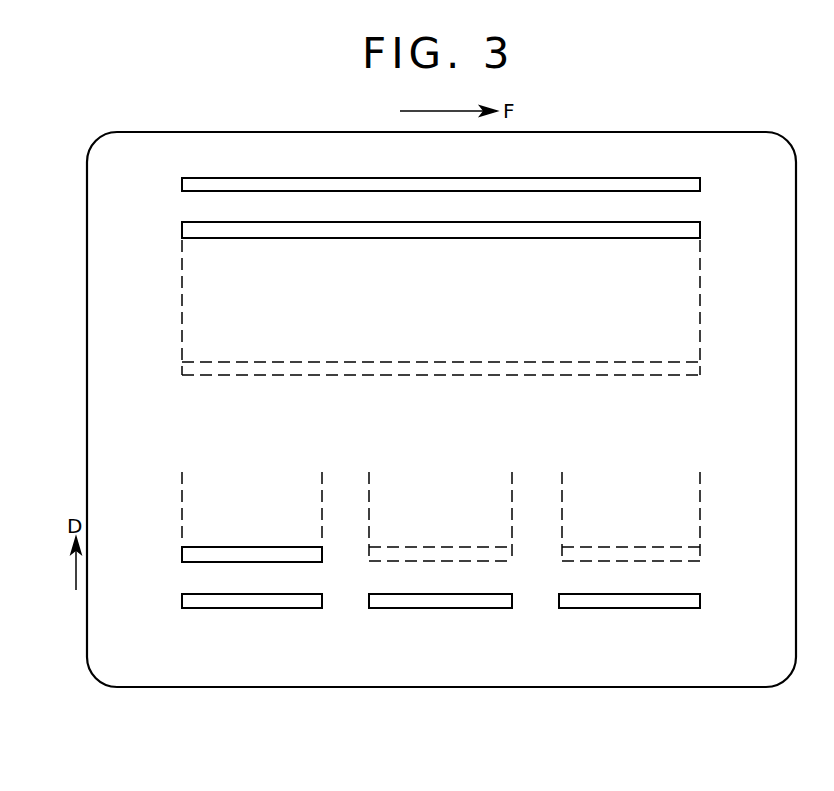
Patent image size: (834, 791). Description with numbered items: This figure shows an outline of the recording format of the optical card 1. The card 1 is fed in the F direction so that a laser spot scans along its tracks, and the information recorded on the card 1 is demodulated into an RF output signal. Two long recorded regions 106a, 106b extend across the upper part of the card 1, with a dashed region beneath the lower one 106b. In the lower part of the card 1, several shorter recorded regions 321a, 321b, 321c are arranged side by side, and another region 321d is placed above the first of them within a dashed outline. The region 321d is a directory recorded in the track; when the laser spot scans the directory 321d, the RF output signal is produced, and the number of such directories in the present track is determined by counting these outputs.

The card 1 is at (796, 662).
The fixed head 106a is at (700, 185).
The fixed head 106b is at (700, 230).
The rotary head 321a is at (232, 608).
The rotary head 321b is at (426, 608).
The rotary head 321c is at (612, 608).
The directory 321d is at (224, 562).